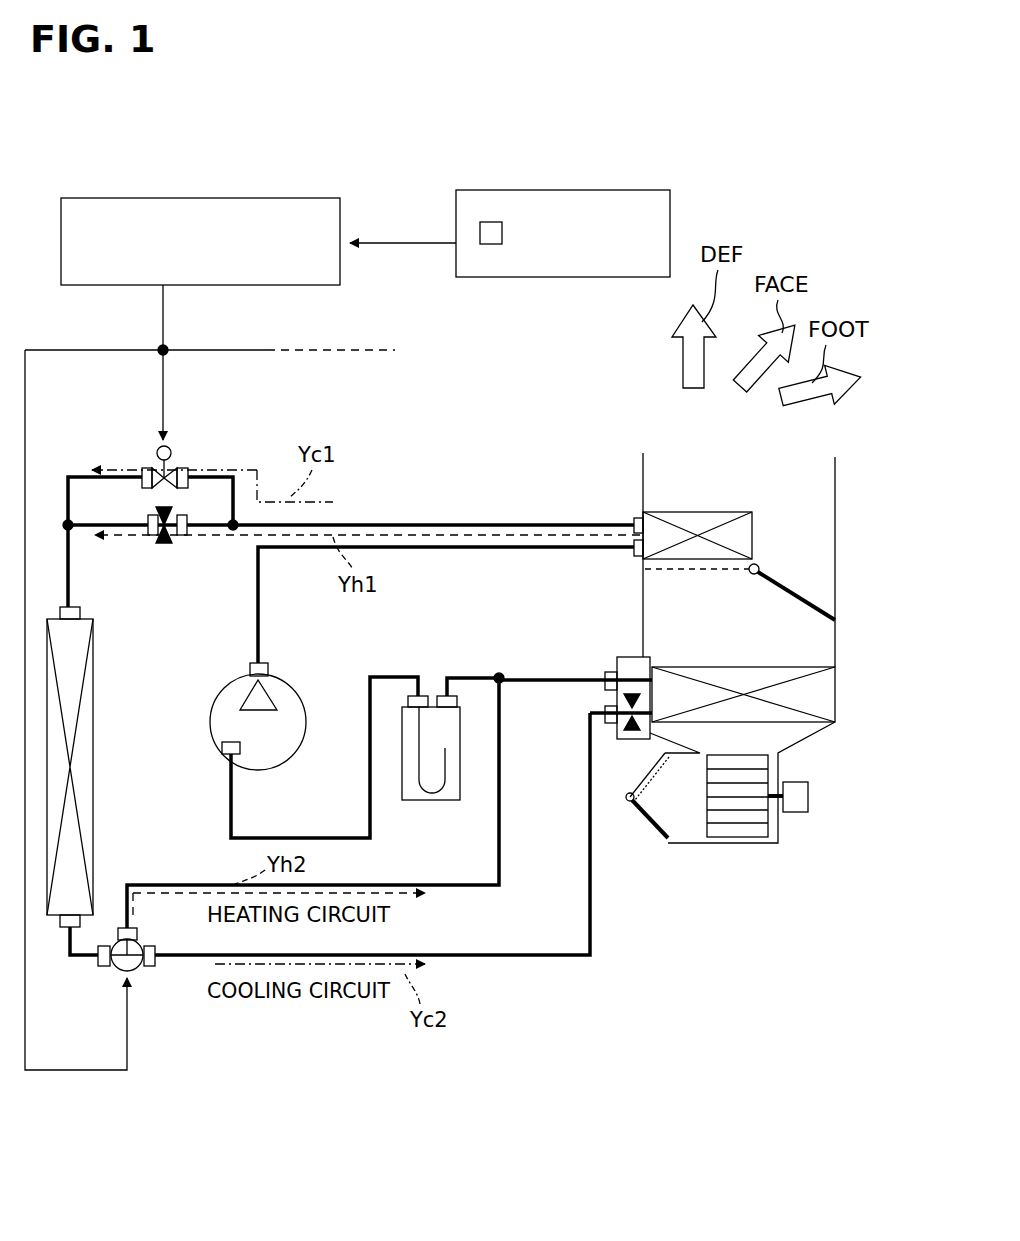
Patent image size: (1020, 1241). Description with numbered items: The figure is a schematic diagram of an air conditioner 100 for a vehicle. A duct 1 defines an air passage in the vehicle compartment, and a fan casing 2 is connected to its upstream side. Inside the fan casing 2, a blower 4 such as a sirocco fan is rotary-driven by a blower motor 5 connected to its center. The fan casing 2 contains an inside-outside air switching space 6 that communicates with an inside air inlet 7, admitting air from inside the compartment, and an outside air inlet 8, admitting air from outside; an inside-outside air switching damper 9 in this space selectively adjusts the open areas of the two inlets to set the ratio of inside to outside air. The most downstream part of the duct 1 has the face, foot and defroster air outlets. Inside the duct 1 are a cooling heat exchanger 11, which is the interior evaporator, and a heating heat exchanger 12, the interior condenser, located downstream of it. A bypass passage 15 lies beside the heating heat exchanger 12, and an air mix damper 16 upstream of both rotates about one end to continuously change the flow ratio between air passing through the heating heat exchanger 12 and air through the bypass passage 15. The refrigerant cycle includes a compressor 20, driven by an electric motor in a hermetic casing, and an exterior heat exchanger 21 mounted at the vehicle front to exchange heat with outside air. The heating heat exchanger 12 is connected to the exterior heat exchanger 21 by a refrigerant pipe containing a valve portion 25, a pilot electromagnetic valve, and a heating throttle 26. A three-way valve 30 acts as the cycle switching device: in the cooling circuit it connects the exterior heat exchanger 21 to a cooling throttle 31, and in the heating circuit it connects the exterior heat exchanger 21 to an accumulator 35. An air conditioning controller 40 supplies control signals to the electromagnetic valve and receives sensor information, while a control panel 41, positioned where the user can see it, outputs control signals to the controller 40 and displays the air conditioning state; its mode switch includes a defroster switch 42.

The duct 1 is at (643, 470).
The fan casing 2 is at (714, 845).
The blower 4 is at (748, 845).
The blower motor 5 is at (808, 796).
The inside-outside air switching space 6 is at (657, 800).
The inside air inlet 7 is at (648, 770).
The outside air inlet 8 is at (643, 805).
The inside-outside air switching damper 9 is at (668, 835).
The cooling heat exchanger 11 is at (812, 690).
The heating heat exchanger 12 is at (705, 511).
The bypass passage 15 is at (793, 565).
The air mix damper 16 is at (798, 592).
The compressor 20 is at (290, 687).
The exterior heat exchanger 21 is at (93, 722).
The valve portion 25 is at (170, 450).
The heating throttle 26 is at (164, 548).
The three-way valve 30 is at (132, 977).
The cooling throttle 31 is at (615, 692).
The accumulator 35 is at (432, 801).
The air conditioning controller 40 is at (226, 198).
The control panel 41 is at (615, 190).
The defroster switch 42 is at (490, 228).
The air conditioner 100 is at (524, 1066).